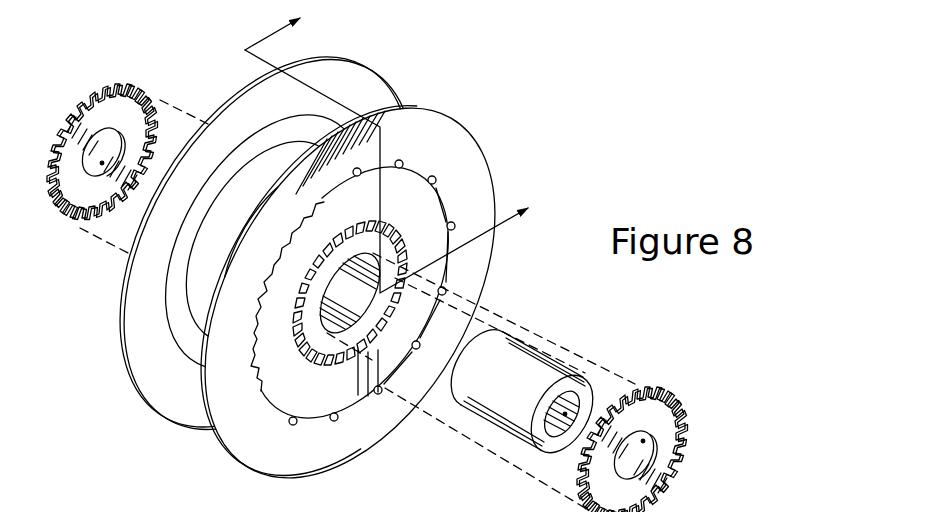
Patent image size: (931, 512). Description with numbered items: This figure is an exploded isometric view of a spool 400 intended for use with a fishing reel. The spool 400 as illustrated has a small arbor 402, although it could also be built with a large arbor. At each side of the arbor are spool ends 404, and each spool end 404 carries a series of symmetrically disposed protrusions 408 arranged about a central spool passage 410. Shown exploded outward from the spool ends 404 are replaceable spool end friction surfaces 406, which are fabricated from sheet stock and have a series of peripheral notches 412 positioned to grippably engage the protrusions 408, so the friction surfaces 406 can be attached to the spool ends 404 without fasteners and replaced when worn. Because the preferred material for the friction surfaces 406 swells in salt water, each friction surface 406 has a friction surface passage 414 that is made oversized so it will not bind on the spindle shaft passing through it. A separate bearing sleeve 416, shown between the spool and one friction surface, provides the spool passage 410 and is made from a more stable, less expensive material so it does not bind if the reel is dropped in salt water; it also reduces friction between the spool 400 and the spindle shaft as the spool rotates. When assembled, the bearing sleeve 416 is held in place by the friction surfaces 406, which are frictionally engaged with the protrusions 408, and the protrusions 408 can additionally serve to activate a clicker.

The spool 400 is at (347, 261).
The small arbor 402 is at (230, 250).
The spool ends 404 is at (215, 105).
The replaceable spool end friction surfaces 406 is at (395, 269).
The protrusions 408 is at (341, 364).
The spool passage 410 is at (565, 414).
The peripheral notches 412 is at (60, 158).
The friction surface passages 414 is at (102, 163).
The bearing sleeve 416 is at (554, 372).